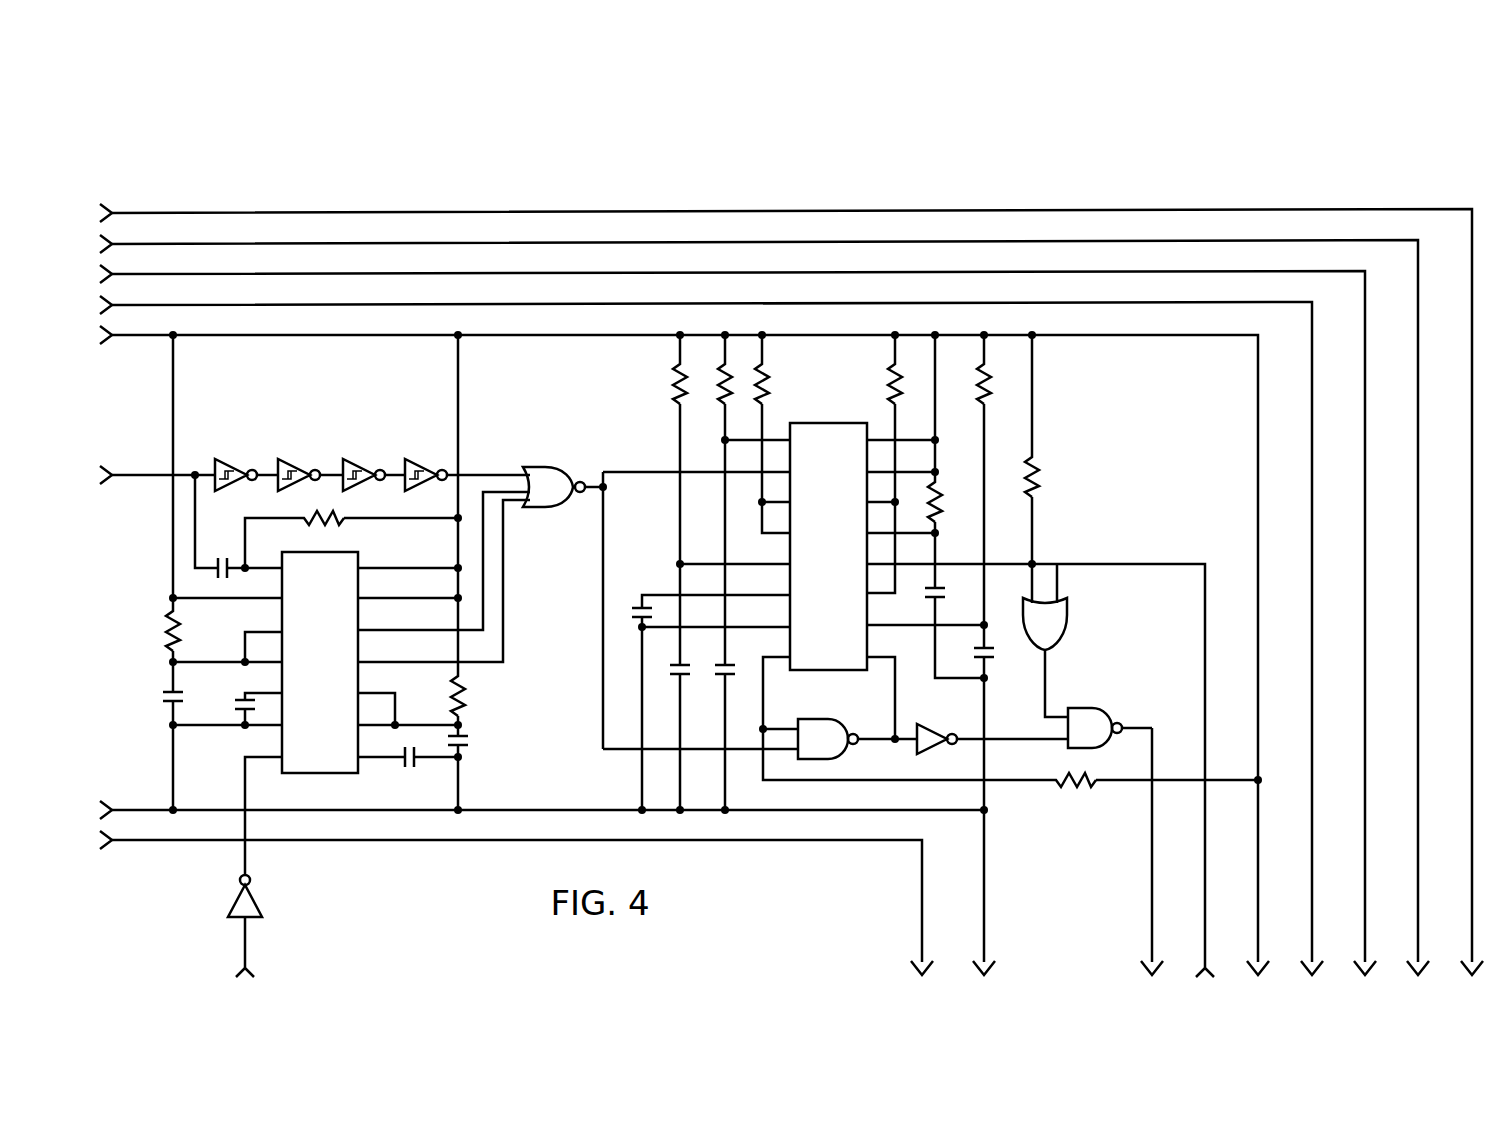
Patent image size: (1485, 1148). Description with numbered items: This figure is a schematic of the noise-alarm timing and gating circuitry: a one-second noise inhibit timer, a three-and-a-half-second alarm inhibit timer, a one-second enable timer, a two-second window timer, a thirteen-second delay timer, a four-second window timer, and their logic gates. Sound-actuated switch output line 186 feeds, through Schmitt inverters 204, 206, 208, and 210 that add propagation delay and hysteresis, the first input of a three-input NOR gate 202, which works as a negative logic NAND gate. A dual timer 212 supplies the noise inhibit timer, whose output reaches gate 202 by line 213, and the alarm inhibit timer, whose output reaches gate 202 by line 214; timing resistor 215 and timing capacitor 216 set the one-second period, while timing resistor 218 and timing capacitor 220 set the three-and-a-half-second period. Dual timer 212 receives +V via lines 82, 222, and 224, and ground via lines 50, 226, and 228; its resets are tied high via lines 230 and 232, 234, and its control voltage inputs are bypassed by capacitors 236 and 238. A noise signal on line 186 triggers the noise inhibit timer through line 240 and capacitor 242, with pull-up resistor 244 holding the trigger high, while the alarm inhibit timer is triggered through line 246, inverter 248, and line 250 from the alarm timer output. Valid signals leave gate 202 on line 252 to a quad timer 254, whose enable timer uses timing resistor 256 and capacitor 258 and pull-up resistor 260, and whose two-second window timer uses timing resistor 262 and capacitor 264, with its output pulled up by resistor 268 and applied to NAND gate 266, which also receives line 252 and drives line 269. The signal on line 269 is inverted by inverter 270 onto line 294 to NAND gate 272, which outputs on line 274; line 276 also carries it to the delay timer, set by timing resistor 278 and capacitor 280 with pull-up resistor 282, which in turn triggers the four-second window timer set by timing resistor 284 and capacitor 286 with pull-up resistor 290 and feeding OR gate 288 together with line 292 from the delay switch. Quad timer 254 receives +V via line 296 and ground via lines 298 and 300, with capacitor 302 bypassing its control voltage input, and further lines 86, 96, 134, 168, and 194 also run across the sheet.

The ground line 50 is at (120, 810).
The +V supply line 82 is at (136, 335).
The line 86 is at (120, 840).
The line 96 is at (136, 305).
The line 134 is at (136, 244).
The line 168 is at (136, 274).
The sound-actuated switch output line 186 is at (117, 475).
The line 194 is at (136, 213).
The 3-input NOR gate 202 is at (552, 468).
The Schmitt inverter 204 is at (246, 460).
The Schmitt inverter 206 is at (312, 460).
The Schmitt inverter 208 is at (376, 460).
The Schmitt inverter 210 is at (438, 460).
The dual timer 212 is at (300, 774).
The line 213 is at (483, 520).
The line 214 is at (503, 608).
The timing resistor 215 is at (467, 688).
The timing capacitor 216 is at (466, 750).
The timing resistor 218 is at (168, 628).
The timing capacitor 220 is at (164, 708).
The line 222 is at (458, 382).
The line 224 is at (383, 568).
The line 226 is at (173, 768).
The line 228 is at (204, 726).
The line 230 is at (383, 598).
The line 232 is at (173, 392).
The line 234 is at (265, 600).
The capacitor 236 is at (405, 766).
The capacitor 238 is at (243, 694).
The line 240 is at (196, 516).
The capacitor 242 is at (234, 577).
The pull-up resistor 244 is at (326, 528).
The line 246 is at (245, 792).
The inverter 248 is at (236, 892).
The line 250 is at (245, 948).
The line 252 is at (640, 472).
The quad timer 254 is at (838, 422).
The timing resistor 256 is at (718, 396).
The capacitor 258 is at (725, 658).
The pull-up resistor 260 is at (766, 376).
The timing resistor 262 is at (672, 376).
The capacitor 264 is at (685, 673).
The 2-input NAND gate 266 is at (830, 720).
The pull-up resistor 268 is at (1076, 792).
The line 269 is at (895, 750).
The inverter 270 is at (937, 750).
The 2-input NAND gate 272 is at (1110, 708).
The line 274 is at (1152, 932).
The line 276 is at (898, 680).
The timing resistor 278 is at (992, 380).
The capacitor 280 is at (990, 660).
The pull-up resistor 282 is at (889, 396).
The timing resistor 284 is at (940, 492).
The capacitor 286 is at (927, 596).
The 2-input OR gate 288 is at (1065, 618).
The pull-up resistor 290 is at (1038, 470).
The line 292 is at (1205, 612).
The line 294 is at (1052, 741).
The line 296 is at (936, 400).
The line 298 is at (642, 770).
The line 300 is at (716, 626).
The capacitor 302 is at (638, 604).